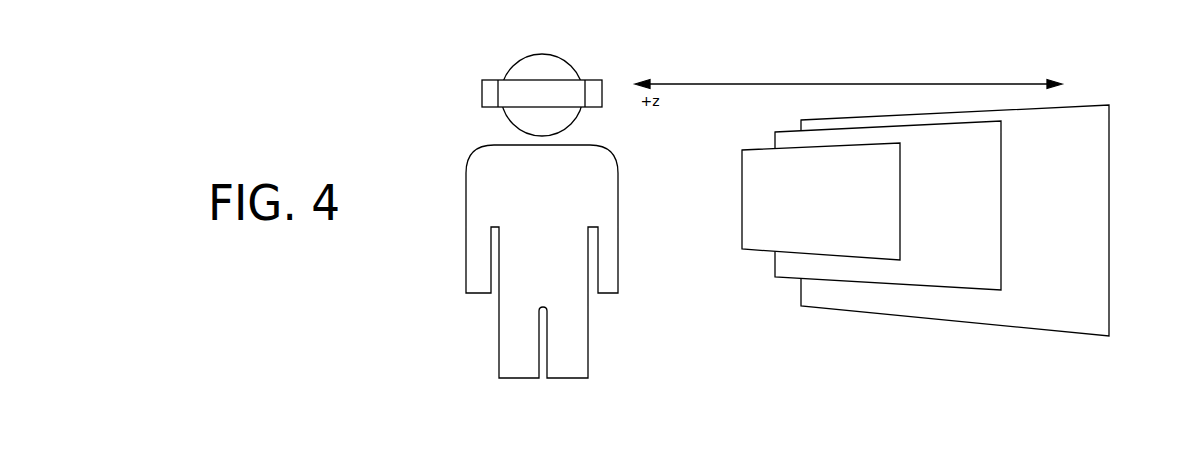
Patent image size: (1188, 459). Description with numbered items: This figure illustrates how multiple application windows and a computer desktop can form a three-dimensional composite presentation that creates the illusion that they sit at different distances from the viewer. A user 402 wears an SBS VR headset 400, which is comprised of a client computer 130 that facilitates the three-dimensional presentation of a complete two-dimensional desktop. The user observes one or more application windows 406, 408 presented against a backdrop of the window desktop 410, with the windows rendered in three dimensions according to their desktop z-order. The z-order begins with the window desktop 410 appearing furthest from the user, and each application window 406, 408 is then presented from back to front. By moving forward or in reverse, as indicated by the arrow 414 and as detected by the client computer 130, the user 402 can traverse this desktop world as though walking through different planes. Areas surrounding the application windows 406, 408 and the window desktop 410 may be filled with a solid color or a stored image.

The SBS VR headset 400 is at (472, 85).
The client computer 130 is at (527, 103).
The user 402 is at (527, 226).
The application window 406 is at (855, 238).
The application window 408 is at (941, 271).
The window desktop 410 is at (1062, 315).
The arrow 414 is at (762, 81).